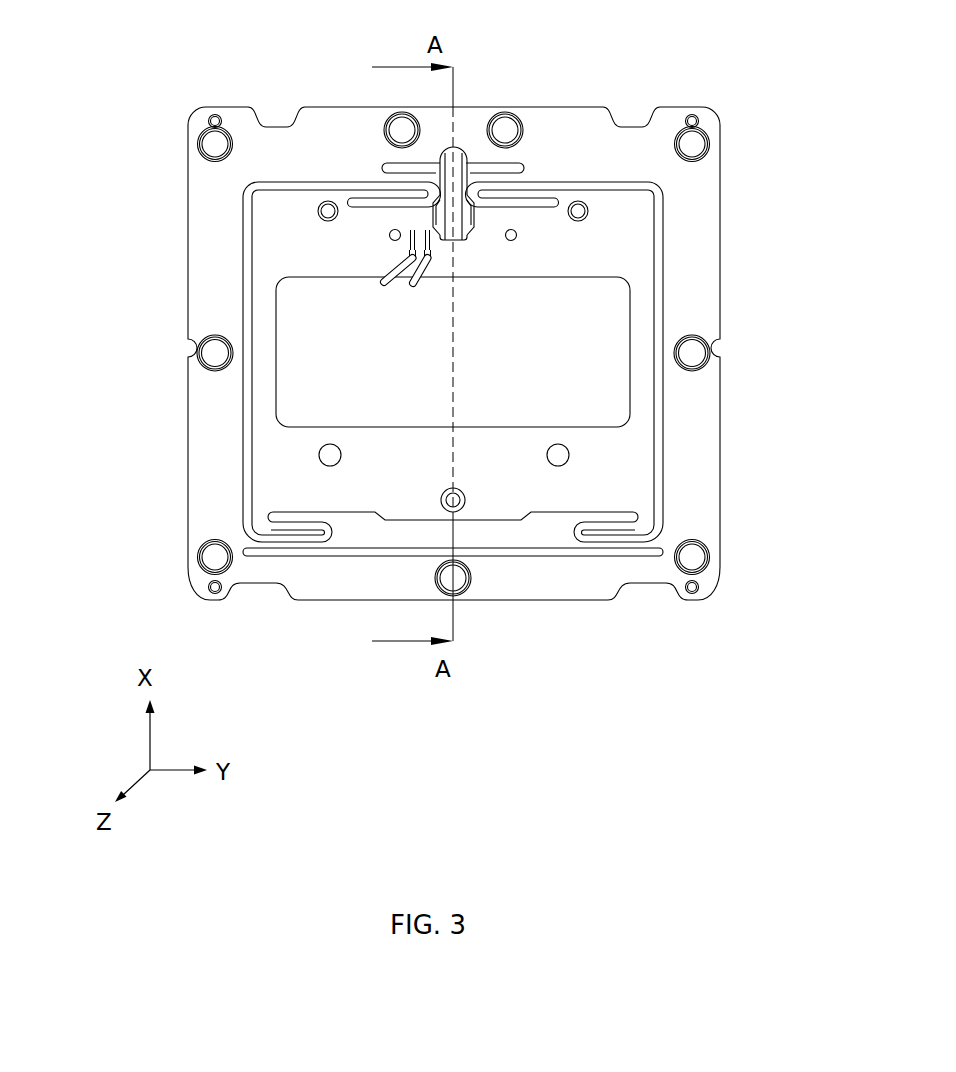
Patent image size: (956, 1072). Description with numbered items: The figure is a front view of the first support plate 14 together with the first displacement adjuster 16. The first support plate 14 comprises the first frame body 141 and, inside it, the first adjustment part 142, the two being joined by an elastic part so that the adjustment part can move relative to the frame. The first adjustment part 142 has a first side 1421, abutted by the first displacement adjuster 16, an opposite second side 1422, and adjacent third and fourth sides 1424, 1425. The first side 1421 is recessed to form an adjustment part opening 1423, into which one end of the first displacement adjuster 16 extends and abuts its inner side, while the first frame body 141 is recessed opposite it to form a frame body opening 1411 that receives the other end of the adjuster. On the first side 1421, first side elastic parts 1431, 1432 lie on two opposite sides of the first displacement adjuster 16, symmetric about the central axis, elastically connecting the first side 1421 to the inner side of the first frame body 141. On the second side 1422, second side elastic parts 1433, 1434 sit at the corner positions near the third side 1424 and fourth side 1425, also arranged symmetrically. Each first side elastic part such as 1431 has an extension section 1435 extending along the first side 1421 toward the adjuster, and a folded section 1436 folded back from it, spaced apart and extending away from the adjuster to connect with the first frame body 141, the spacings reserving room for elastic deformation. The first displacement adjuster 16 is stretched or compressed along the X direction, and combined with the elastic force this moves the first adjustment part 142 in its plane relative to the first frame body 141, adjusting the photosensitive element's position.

The first support plate 14 is at (436, 353).
The first frame body 141 is at (680, 320).
The first adjustment part 142 is at (275, 387).
The frame body opening 1411 is at (630, 135).
The first displacement adjuster 16 is at (465, 160).
The first side 1421 is at (292, 190).
The second side 1422 is at (345, 512).
The adjustment part opening 1423 is at (467, 231).
The third side 1424 is at (252, 315).
The fourth side 1425 is at (660, 399).
The first side elastic part 1431 is at (322, 105).
The first side elastic part 1432 is at (513, 163).
The second side elastic part 1433 is at (305, 556).
The second side elastic part 1434 is at (626, 554).
The extension section 1435 is at (388, 170).
The folded section 1436 is at (380, 203).